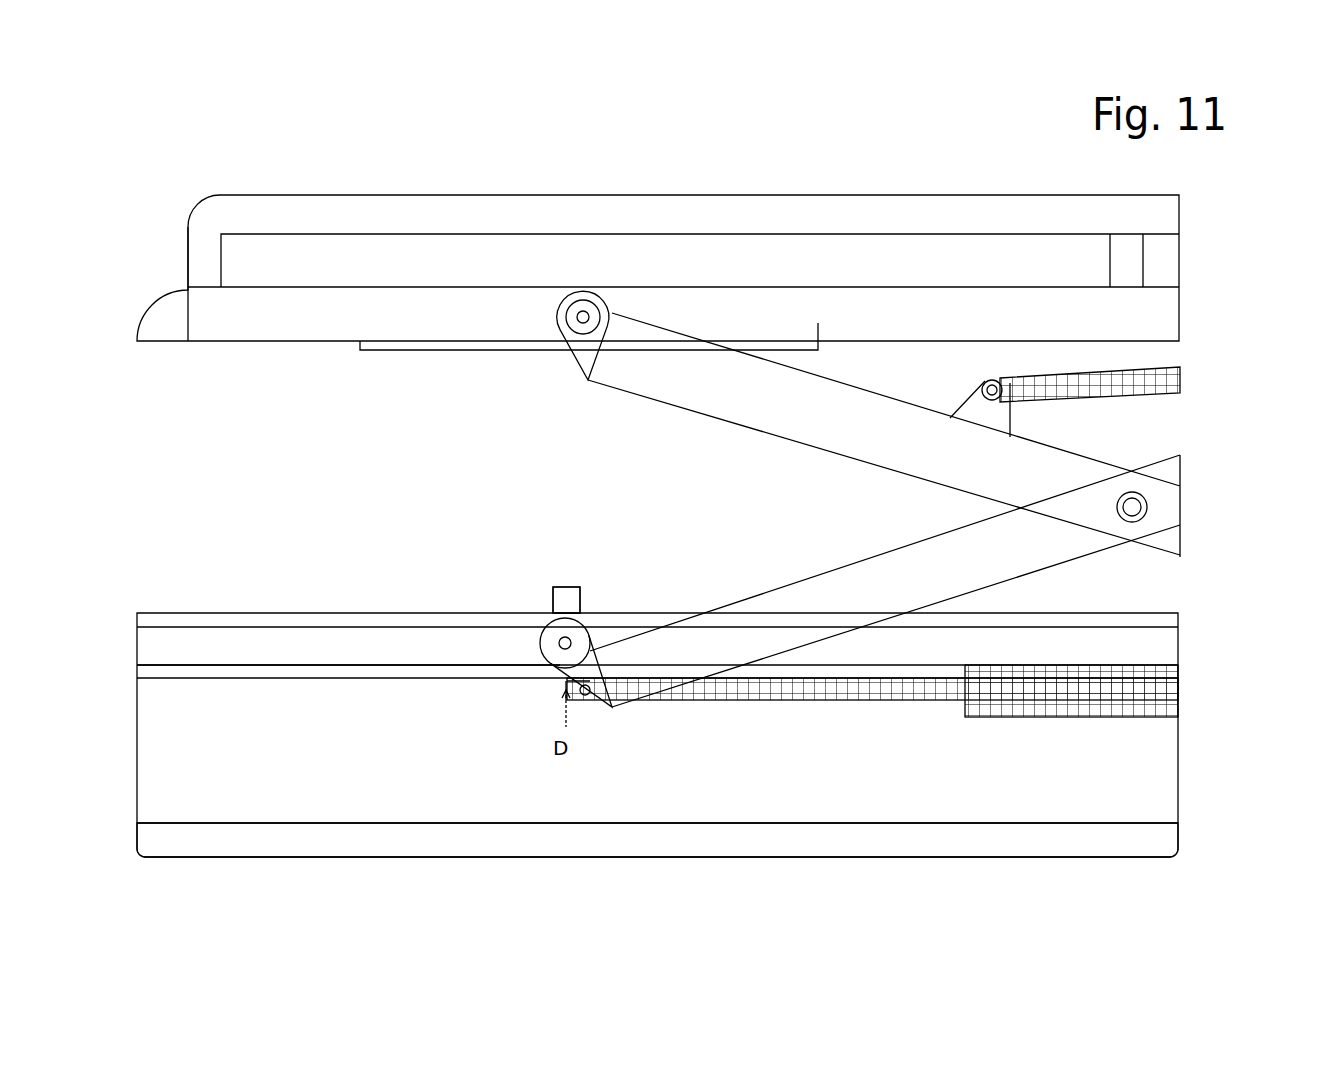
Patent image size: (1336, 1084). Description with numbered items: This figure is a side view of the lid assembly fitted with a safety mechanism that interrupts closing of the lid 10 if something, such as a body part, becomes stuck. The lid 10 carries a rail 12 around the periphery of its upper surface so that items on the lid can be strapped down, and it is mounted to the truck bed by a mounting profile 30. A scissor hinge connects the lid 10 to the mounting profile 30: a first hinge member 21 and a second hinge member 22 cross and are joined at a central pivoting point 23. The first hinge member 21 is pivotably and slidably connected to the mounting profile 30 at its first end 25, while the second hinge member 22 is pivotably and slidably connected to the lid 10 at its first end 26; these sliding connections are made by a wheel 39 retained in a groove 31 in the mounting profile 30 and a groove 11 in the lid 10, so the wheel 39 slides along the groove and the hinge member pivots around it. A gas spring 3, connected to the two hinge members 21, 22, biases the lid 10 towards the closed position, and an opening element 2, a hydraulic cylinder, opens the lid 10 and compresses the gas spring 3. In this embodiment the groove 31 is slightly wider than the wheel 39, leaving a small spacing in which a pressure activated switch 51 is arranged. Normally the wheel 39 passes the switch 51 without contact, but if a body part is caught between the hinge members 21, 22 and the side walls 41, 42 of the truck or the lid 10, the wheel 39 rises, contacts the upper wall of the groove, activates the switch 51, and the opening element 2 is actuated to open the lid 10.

The lid 10 is at (450, 307).
The groove 11 is at (407, 340).
The rail 12 is at (706, 195).
The first end of the second hinge member 26 is at (596, 312).
The second hinge member 22 is at (793, 397).
The first hinge member 21 is at (1017, 578).
The central pivoting point 23 is at (1147, 506).
The gas spring 3 is at (1112, 360).
The mounting profile 30 is at (272, 620).
The groove 31 is at (260, 642).
The side wall 41 is at (657, 837).
The side wall 42 is at (860, 753).
The first end of the first hinge member 25 is at (627, 673).
The wheel 39 is at (565, 643).
The pressure activated switch 51 is at (580, 597).
The opening element 2 is at (1017, 687).